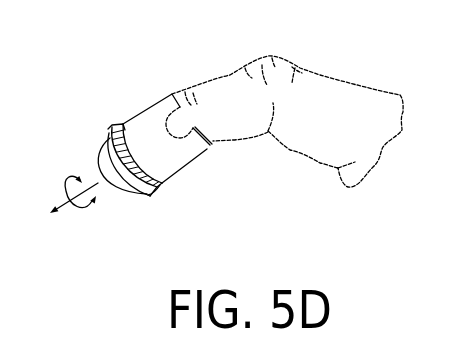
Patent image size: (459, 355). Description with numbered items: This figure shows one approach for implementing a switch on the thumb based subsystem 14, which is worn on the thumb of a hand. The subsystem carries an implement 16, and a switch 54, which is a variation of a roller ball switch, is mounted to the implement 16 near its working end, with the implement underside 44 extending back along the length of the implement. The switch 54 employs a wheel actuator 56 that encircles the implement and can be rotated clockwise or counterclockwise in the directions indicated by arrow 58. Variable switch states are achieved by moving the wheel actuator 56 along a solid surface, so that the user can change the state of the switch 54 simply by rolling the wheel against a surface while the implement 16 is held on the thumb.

The thumb based subsystem 14 is at (82, 88).
The implement 16 is at (93, 146).
The implement underside 44 is at (169, 179).
The switch 54 is at (154, 200).
The wheel actuator 56 is at (116, 128).
The arrow 58 is at (88, 214).